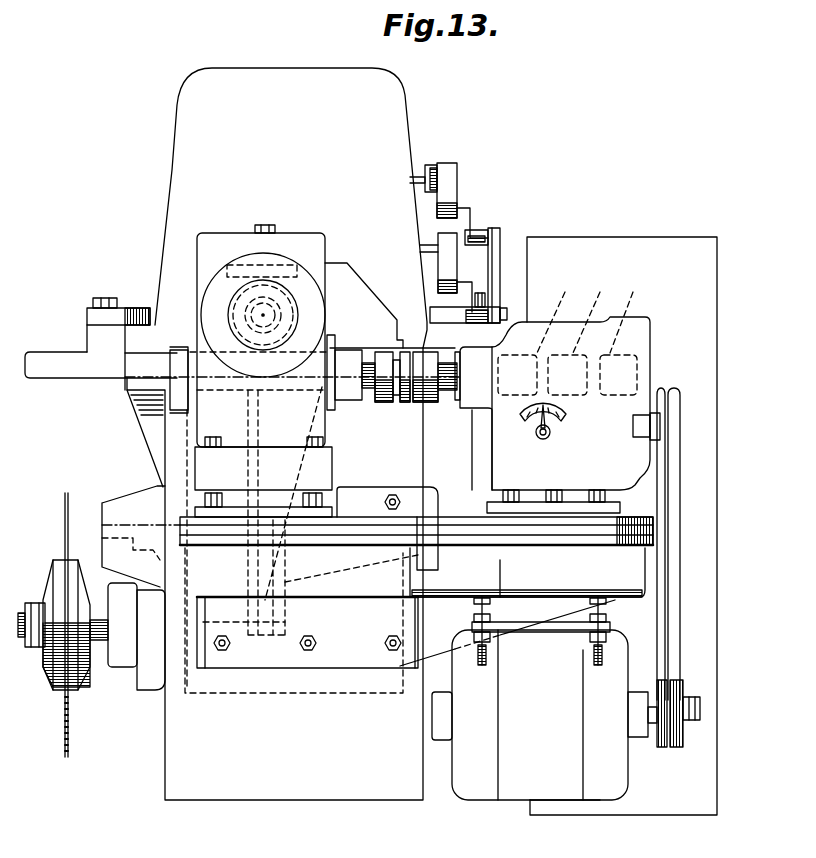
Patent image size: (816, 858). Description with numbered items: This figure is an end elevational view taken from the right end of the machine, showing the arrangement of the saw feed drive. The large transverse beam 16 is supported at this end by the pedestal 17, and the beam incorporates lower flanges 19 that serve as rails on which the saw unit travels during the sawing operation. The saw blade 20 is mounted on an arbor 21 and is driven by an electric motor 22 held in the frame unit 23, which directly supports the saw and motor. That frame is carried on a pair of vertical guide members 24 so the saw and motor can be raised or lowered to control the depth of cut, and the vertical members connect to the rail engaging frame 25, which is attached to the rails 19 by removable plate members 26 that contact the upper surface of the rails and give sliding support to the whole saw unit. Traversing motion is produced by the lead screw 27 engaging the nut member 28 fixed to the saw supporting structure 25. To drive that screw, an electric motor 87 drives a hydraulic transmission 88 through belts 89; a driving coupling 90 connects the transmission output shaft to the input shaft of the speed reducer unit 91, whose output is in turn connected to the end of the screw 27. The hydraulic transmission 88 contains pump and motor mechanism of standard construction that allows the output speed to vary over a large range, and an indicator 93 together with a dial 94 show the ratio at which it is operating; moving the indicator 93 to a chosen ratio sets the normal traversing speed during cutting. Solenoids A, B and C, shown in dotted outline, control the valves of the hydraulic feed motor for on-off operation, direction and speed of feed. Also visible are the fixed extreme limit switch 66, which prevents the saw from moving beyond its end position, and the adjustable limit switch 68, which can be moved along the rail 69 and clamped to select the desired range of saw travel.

The transverse beam 16 is at (173, 113).
The pedestal 17 is at (173, 755).
The lower flanges 19 is at (133, 338).
The saw blade 20 is at (67, 752).
The arbor 21 is at (100, 613).
The electric motor 22 is at (270, 697).
The frame unit 23 is at (147, 482).
The vertical guide members 24 is at (307, 634).
The rail engaging frame 25 is at (107, 375).
The removable plate members 26 is at (88, 313).
The lead screw 27 is at (273, 303).
The nut member 28 is at (300, 328).
The extreme limit switch 66 is at (455, 262).
The adjustable limit switch 68 is at (457, 180).
The rail 69 is at (430, 165).
The electric motor 87 is at (522, 772).
The hydraulic transmission 88 is at (640, 337).
The belts 89 is at (675, 572).
The driving coupling 90 is at (407, 403).
The speed reducer unit 91 is at (202, 245).
The indicator 93 is at (530, 418).
The dial 94 is at (563, 415).